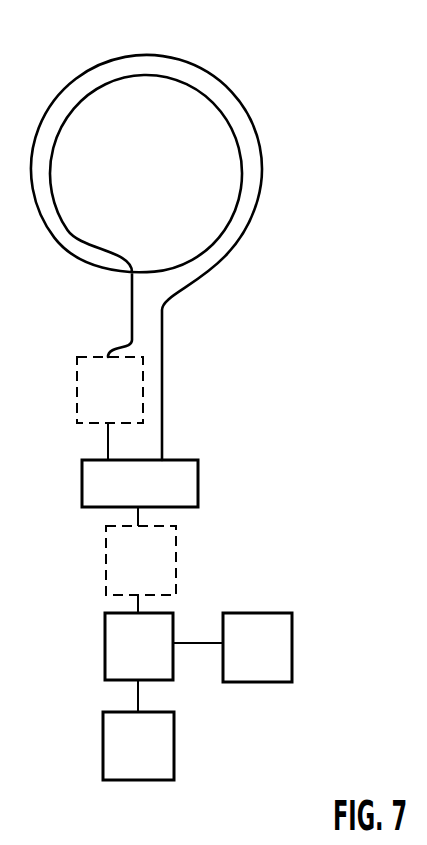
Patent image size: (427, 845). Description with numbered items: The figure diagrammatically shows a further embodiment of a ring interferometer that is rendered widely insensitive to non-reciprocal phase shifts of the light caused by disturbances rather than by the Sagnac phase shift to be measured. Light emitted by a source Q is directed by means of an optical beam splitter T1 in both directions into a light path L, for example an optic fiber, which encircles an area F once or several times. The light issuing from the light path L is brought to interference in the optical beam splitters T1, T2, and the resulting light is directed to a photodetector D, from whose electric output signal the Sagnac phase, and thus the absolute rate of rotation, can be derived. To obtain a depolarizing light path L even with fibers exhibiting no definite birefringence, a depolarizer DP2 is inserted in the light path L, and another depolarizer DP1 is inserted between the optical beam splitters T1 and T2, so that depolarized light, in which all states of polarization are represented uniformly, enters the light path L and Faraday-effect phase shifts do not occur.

The light path L is at (146, 237).
The area F is at (146, 257).
The depolarizer DP2 is at (110, 390).
The optical beam splitter T1 is at (140, 483).
The depolarizer DP1 is at (141, 560).
The optical beam splitter T2 is at (139, 646).
The photodetector D is at (257, 647).
The source Q is at (138, 746).